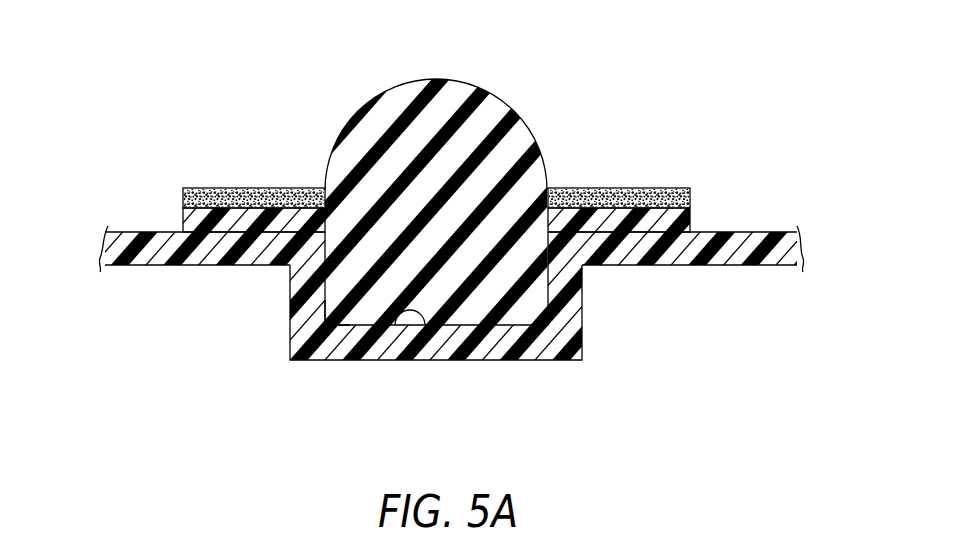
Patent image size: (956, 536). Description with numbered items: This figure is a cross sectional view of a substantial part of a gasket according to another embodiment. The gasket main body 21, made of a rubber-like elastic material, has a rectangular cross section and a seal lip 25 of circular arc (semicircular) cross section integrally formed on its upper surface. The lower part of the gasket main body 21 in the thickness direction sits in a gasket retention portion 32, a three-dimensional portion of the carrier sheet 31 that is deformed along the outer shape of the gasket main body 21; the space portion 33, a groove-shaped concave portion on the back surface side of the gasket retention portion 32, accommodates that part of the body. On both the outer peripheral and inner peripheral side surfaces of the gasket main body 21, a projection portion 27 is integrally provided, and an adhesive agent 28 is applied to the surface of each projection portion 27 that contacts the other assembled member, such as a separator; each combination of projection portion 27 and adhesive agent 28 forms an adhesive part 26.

The gasket main body 21 is at (404, 110).
The seal lip 25 is at (467, 97).
The adhesive part 26 is at (266, 175).
The projection portion 27 is at (183, 215).
The adhesive agent 28 is at (205, 197).
The carrier sheet 31 is at (695, 255).
The gasket retention portion 32 is at (323, 343).
The space portion 33 is at (423, 338).